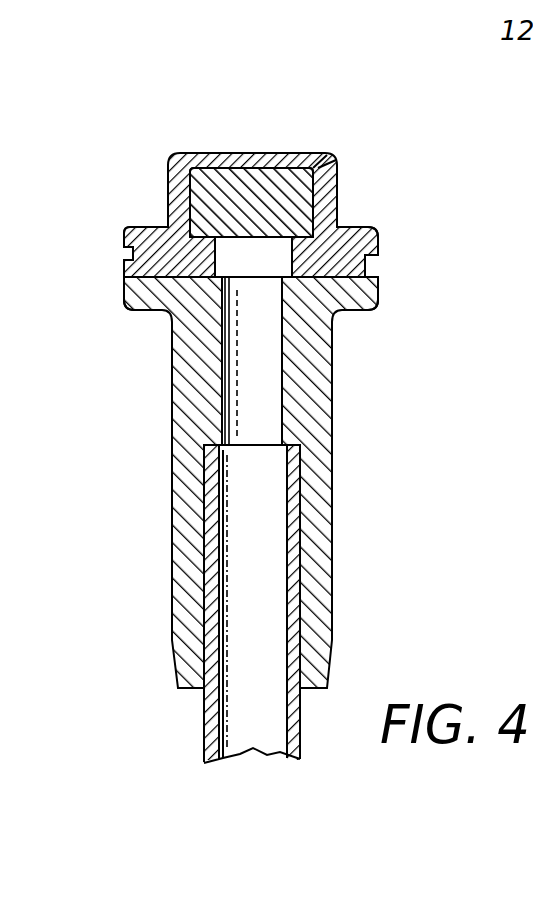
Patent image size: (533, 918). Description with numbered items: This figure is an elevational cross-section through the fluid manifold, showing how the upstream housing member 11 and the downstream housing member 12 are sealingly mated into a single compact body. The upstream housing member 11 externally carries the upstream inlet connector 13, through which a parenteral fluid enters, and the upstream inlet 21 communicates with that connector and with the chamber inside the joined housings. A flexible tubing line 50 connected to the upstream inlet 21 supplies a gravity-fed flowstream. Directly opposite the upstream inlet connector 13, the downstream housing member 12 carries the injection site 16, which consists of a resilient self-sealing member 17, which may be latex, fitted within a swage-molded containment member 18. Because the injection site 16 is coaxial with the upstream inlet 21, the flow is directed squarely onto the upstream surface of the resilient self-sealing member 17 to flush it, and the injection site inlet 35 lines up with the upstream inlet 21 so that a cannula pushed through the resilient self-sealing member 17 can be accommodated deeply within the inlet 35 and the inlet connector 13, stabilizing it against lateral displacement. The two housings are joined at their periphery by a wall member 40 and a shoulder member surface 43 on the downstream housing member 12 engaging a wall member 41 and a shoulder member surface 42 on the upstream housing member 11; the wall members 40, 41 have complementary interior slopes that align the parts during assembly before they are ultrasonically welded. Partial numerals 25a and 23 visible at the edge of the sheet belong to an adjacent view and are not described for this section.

The upstream housing member 11 is at (337, 492).
The downstream housing member 12 is at (162, 217).
The upstream inlet connector 13 is at (172, 547).
The injection site 16 is at (347, 198).
The resilient self-sealing member 17 is at (238, 188).
The containment member 18 is at (313, 152).
The upstream inlet 21 is at (258, 308).
The injection site inlet 35 is at (333, 330).
The wall member 40 is at (372, 265).
The wall member 41 is at (377, 288).
The shoulder member surface 42 is at (153, 232).
The shoulder member surface 43 is at (158, 308).
The flexible tubing line 50 is at (203, 725).
The partial numeral from adjacent figure 25a is at (507, 83).
The partial numeral from adjacent figure 23 is at (522, 162).